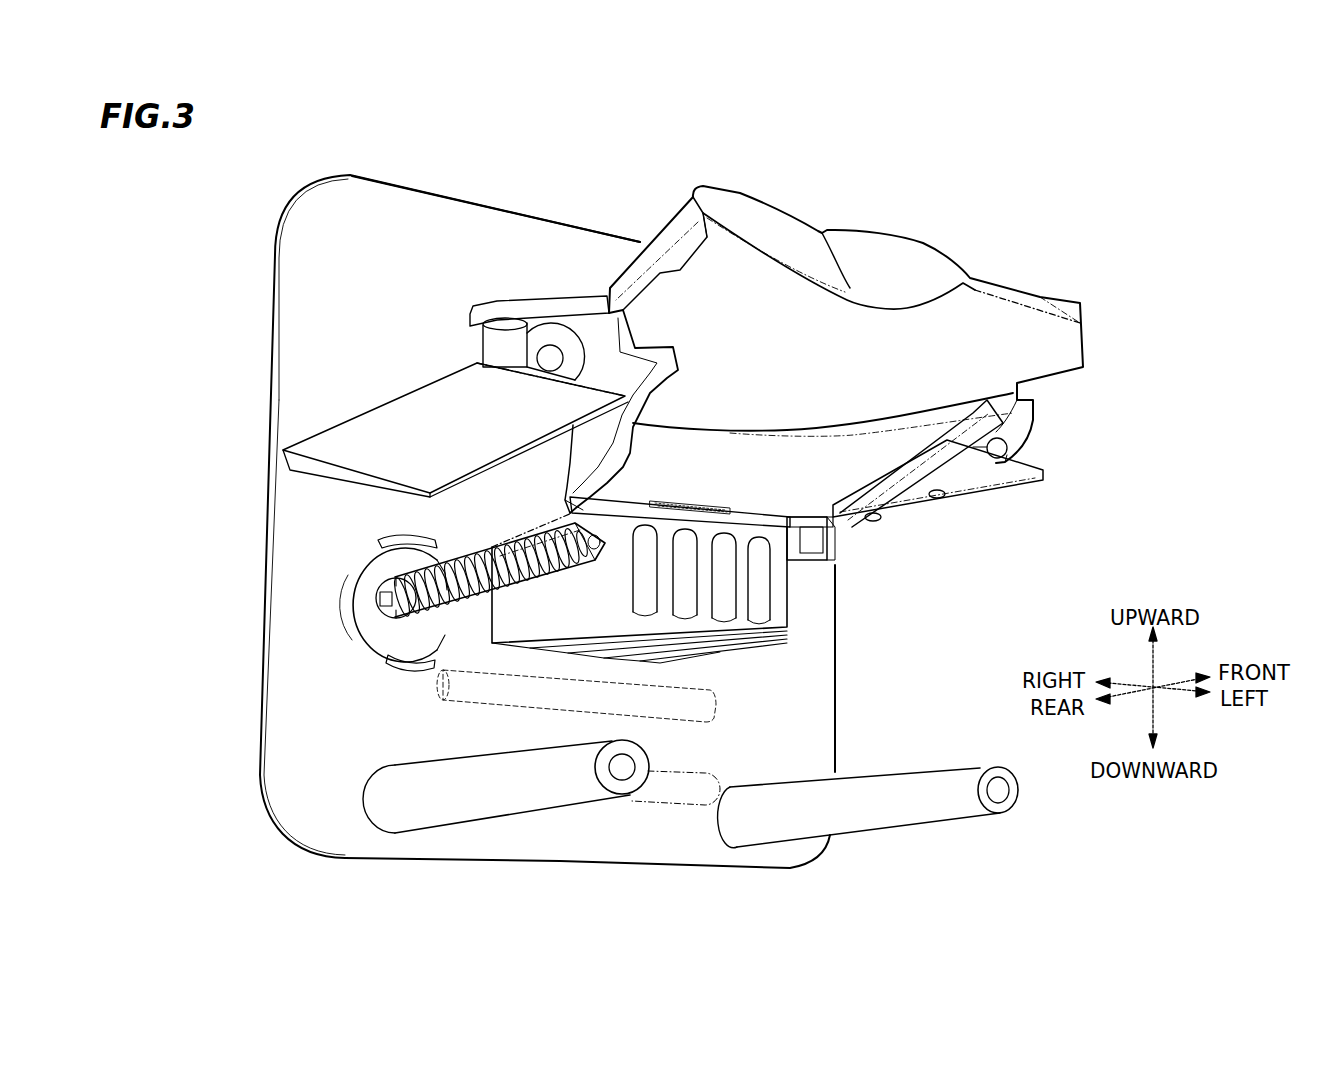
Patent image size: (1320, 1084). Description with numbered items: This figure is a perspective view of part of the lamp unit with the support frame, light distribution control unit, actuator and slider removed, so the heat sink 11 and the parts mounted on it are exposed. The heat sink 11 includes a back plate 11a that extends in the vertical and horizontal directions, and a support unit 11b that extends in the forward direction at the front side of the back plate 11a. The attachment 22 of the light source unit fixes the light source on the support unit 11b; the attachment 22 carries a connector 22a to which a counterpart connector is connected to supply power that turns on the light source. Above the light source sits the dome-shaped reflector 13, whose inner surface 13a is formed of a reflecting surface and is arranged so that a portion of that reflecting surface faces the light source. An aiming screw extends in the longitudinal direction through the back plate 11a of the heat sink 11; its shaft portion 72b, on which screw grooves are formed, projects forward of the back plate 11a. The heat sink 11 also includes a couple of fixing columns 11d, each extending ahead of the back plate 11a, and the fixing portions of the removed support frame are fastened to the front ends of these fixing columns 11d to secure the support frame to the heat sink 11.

The heat sink 11 is at (269, 213).
The back plate 11a is at (405, 198).
The support unit 11b is at (762, 592).
The fixing columns 11d is at (432, 812).
The reflector 13 is at (669, 202).
The inner surface 13a is at (1033, 350).
The attachment 22 is at (738, 498).
The connector 22a is at (832, 545).
The shaft portion 72b is at (494, 604).